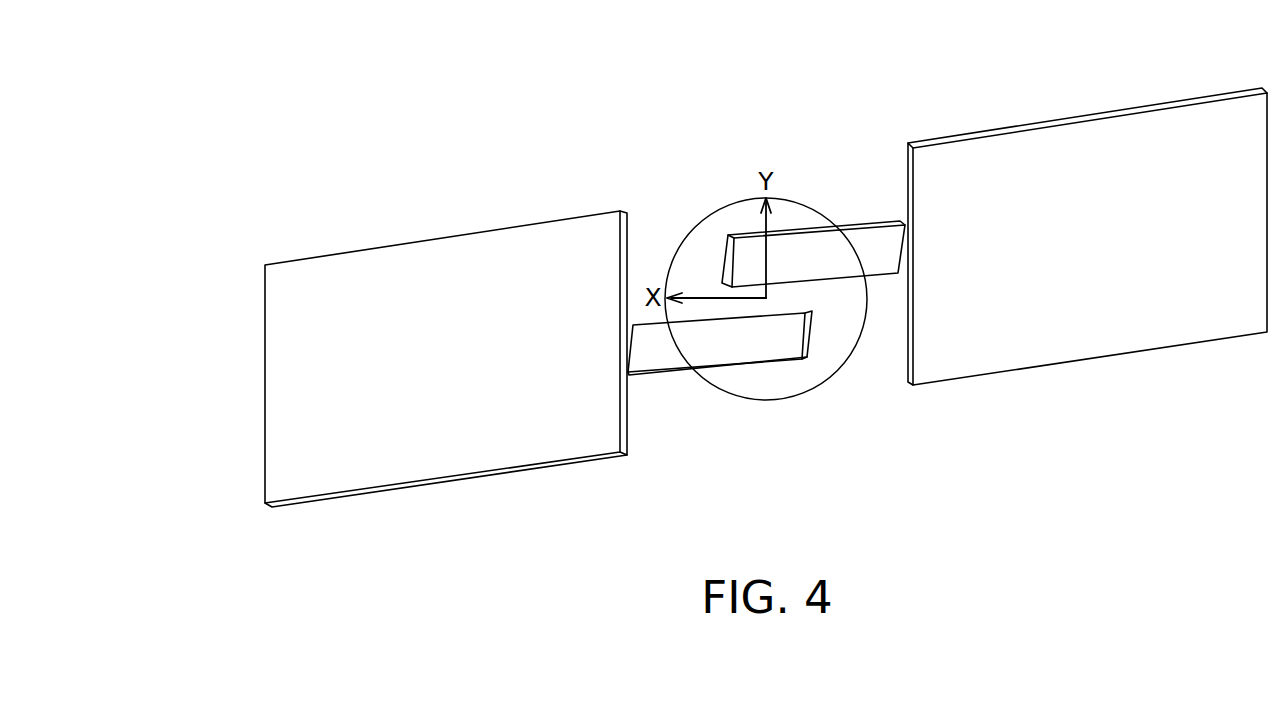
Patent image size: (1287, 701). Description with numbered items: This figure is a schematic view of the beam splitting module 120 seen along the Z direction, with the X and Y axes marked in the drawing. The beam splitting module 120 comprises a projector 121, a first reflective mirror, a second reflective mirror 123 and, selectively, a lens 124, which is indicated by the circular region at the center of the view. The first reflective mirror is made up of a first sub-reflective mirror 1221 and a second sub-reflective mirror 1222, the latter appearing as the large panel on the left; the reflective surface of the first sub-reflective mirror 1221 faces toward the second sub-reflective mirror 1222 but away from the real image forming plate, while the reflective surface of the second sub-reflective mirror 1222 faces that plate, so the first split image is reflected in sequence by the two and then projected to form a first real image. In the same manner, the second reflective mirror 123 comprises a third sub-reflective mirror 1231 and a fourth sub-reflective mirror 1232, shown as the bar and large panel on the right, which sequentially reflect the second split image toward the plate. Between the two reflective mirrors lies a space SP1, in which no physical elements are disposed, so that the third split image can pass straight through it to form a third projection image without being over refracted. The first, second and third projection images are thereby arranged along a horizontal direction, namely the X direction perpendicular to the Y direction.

The beam splitting module 120 is at (619, 107).
The projector 121 is at (462, 537).
The first sub-reflective mirror 1221 is at (665, 349).
The second sub-reflective mirror 1222 is at (480, 447).
The second reflective mirror 123 is at (840, 52).
The third sub-reflective mirror 1231 is at (862, 245).
The fourth sub-reflective mirror 1232 is at (1070, 148).
The lens 124 is at (727, 220).
The space SP1 is at (790, 299).